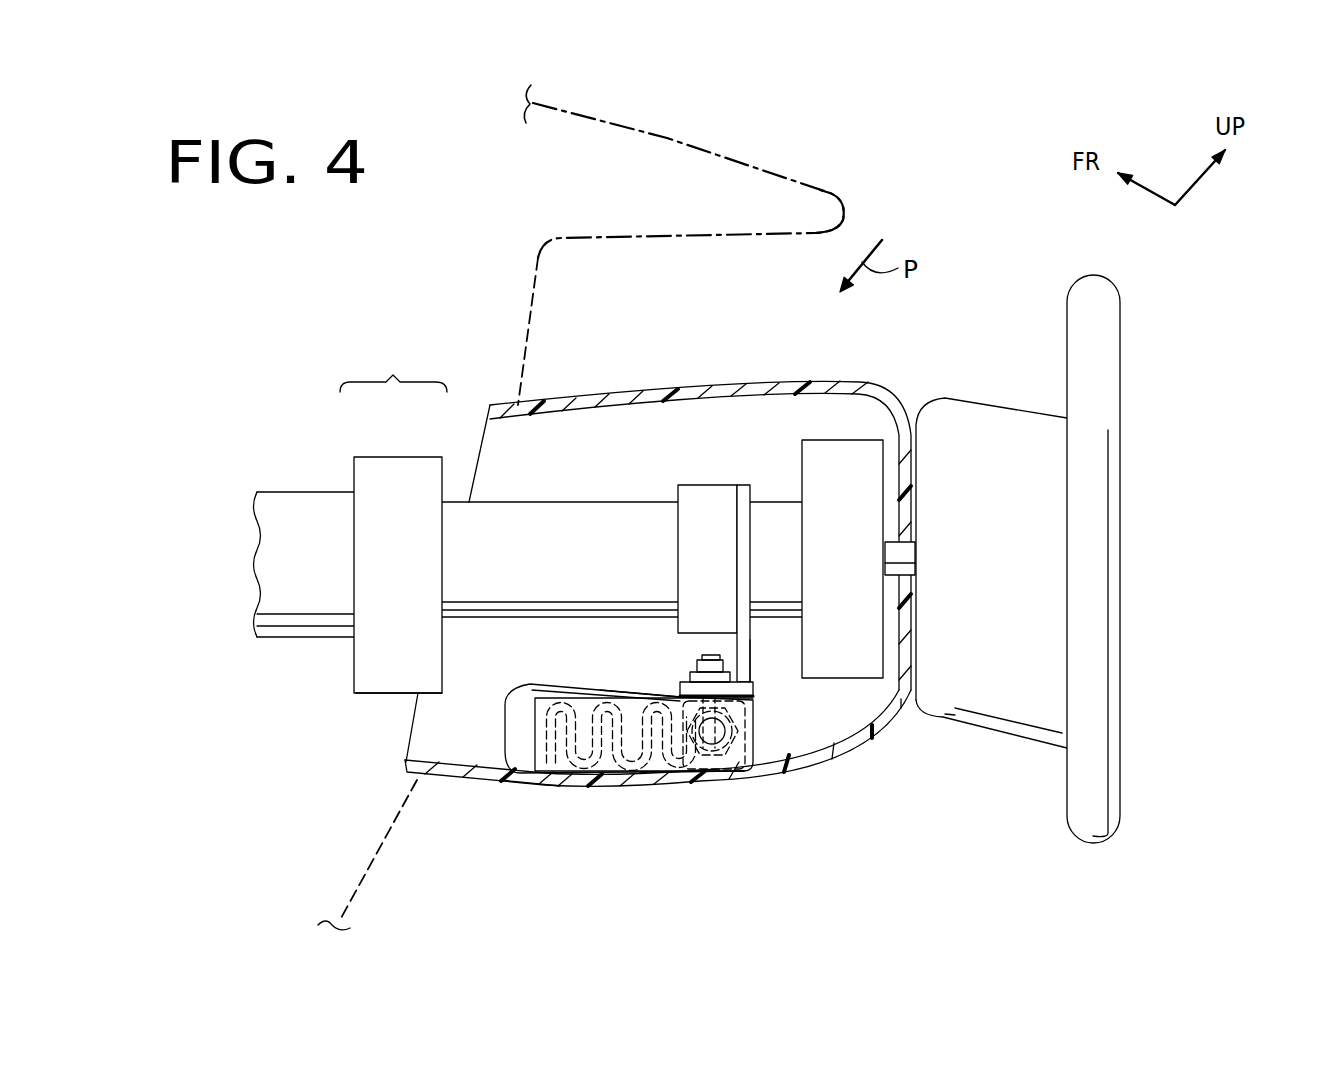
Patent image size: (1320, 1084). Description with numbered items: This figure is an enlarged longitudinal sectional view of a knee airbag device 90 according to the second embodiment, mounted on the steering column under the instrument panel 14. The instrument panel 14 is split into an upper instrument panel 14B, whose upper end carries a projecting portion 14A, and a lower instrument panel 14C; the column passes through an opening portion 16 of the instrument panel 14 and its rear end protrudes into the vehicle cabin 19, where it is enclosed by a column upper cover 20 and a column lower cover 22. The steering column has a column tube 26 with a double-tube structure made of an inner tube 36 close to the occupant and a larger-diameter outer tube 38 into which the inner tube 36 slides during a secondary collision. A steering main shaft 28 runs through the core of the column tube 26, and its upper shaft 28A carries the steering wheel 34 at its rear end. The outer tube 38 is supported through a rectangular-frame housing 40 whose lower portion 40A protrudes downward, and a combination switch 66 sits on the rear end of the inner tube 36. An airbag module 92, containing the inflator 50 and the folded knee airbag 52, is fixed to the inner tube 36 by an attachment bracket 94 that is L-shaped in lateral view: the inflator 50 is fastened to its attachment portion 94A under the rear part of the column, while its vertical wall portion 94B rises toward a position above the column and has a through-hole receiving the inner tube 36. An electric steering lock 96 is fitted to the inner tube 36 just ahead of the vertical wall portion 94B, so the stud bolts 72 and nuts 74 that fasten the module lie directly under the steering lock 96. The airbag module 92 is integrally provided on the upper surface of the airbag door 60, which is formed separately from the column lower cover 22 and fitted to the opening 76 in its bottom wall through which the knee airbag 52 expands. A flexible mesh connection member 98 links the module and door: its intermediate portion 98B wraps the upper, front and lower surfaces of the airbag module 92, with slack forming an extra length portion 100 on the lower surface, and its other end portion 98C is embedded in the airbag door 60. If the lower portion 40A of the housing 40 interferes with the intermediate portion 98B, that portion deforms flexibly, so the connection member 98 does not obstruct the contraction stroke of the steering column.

The instrument panel 14 is at (748, 163).
The projecting portion 14A is at (846, 207).
The upper instrument panel 14B is at (540, 292).
The lower instrument panel 14C is at (375, 872).
The opening portion 16 is at (518, 395).
The vehicle cabin 19 is at (930, 885).
The column upper cover 20 is at (757, 385).
The column lower cover 22 is at (868, 750).
The column tube 26 is at (393, 368).
The steering main shaft 28 is at (991, 573).
The upper shaft 28A is at (915, 556).
The steering wheel 34 is at (1116, 529).
The inner tube 36 is at (478, 502).
The outer tube 38 is at (331, 492).
The housing 40 is at (354, 695).
The lower portion of housing 40A is at (408, 695).
The inflator 50 is at (715, 785).
The knee airbag 52 is at (620, 787).
The airbag door 60 is at (600, 788).
The combination switch 66 is at (825, 455).
The stud bolts 72 is at (708, 660).
The nuts 74 is at (722, 668).
The opening 76 is at (531, 786).
The knee airbag device 90 is at (756, 822).
The airbag module 92 is at (607, 682).
The attachment bracket 94 is at (752, 650).
The attachment portion 94A is at (682, 686).
The vertical wall portion 94B is at (743, 490).
The electric steering lock 96 is at (700, 490).
The connection member 98 is at (507, 732).
The intermediate portion 98B is at (512, 688).
The other end portion 98C is at (742, 785).
The extra length portion 100 is at (680, 788).